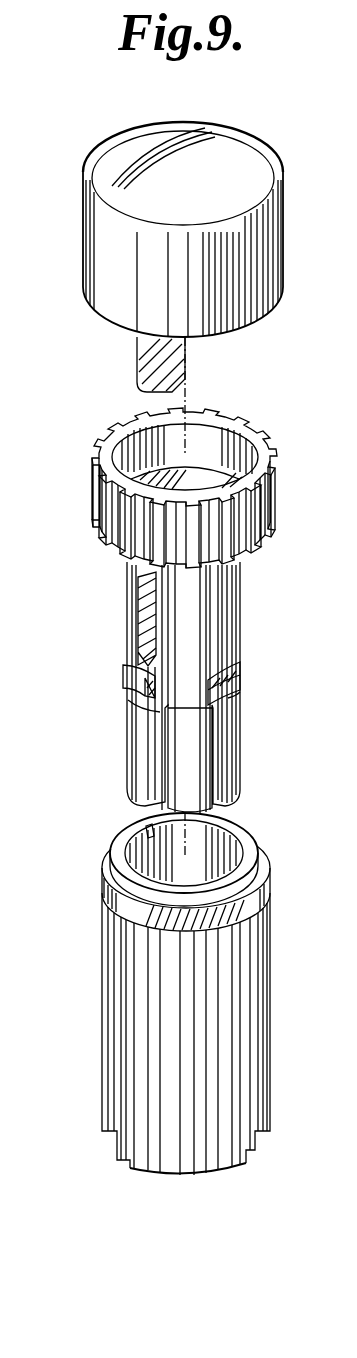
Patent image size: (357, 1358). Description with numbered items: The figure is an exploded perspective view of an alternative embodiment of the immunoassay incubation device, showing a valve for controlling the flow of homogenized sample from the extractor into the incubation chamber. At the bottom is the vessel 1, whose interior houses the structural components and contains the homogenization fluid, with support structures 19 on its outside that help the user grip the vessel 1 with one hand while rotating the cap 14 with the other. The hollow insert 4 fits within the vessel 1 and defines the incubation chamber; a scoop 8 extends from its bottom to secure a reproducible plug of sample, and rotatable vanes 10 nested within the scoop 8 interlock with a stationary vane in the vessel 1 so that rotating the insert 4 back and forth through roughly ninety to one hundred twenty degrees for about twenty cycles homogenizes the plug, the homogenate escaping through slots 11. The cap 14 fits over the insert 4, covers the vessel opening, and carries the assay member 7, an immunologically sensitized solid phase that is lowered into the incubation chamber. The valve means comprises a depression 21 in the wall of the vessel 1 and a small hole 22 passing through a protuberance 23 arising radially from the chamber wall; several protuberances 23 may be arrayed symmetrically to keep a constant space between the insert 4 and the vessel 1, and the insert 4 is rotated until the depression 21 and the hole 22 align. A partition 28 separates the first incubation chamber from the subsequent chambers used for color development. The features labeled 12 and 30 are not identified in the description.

The vessel 1 is at (156, 994).
The insert 4 is at (176, 687).
The assay member 7 is at (137, 354).
The scoop 8 is at (142, 748).
The rotatable vanes 10 is at (222, 112).
The slots 11 is at (212, 760).
The section line 12- 12 is at (27, 688).
The cap 14 is at (290, 153).
The support structures 19 is at (133, 1086).
The depression 21 is at (150, 823).
The small hole 22 is at (241, 683).
The protuberance 23 is at (134, 683).
The partition 28 is at (228, 470).
The window opening 30 is at (137, 599).